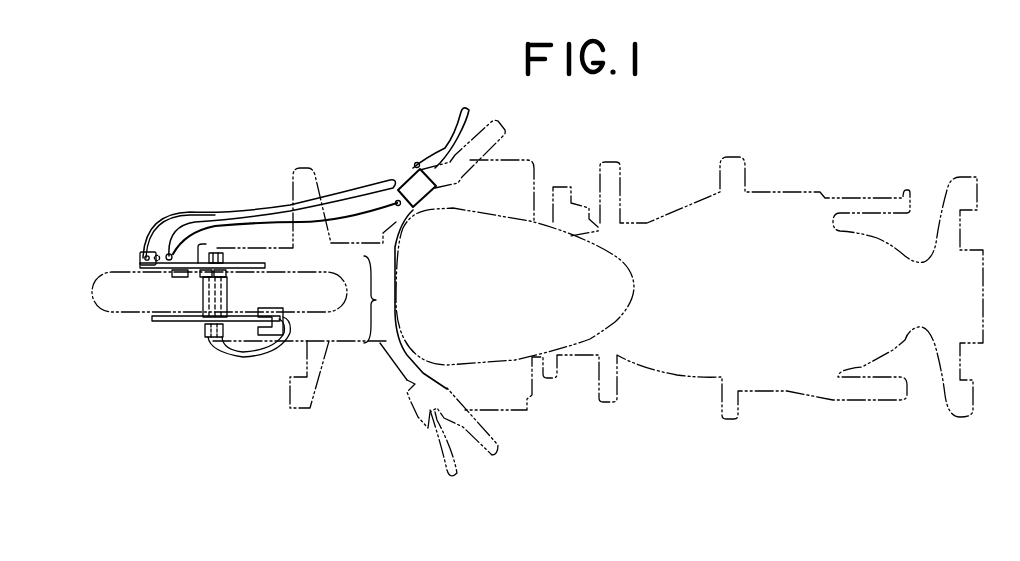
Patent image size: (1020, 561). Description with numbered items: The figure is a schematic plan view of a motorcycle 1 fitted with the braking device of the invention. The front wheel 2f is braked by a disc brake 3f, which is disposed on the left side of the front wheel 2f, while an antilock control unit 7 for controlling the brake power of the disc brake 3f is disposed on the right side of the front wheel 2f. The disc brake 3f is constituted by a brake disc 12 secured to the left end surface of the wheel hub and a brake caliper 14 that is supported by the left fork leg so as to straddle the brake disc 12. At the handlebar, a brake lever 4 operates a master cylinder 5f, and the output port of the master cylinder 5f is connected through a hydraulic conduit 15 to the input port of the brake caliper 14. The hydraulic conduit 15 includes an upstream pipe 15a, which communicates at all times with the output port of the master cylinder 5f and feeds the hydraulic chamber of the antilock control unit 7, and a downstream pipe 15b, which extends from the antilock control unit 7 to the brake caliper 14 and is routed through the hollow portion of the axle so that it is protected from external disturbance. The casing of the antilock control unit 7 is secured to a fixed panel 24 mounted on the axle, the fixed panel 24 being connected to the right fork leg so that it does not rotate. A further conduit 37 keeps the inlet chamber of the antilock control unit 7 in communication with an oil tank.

The motorcycle 1 is at (645, 203).
The front wheel 2f is at (104, 273).
The disc brake 3f is at (198, 327).
The brake lever 4 is at (454, 137).
The master cylinder 5f is at (405, 183).
The antilock control unit 7 is at (160, 243).
The brake disc 12 is at (152, 318).
The brake caliper 14 is at (275, 331).
The hydraulic conduit 15 is at (431, 343).
The upstream pipe 15a is at (322, 228).
The downstream pipe 15b is at (296, 330).
The fixed panel 24 is at (228, 268).
The conduit 37 is at (347, 181).